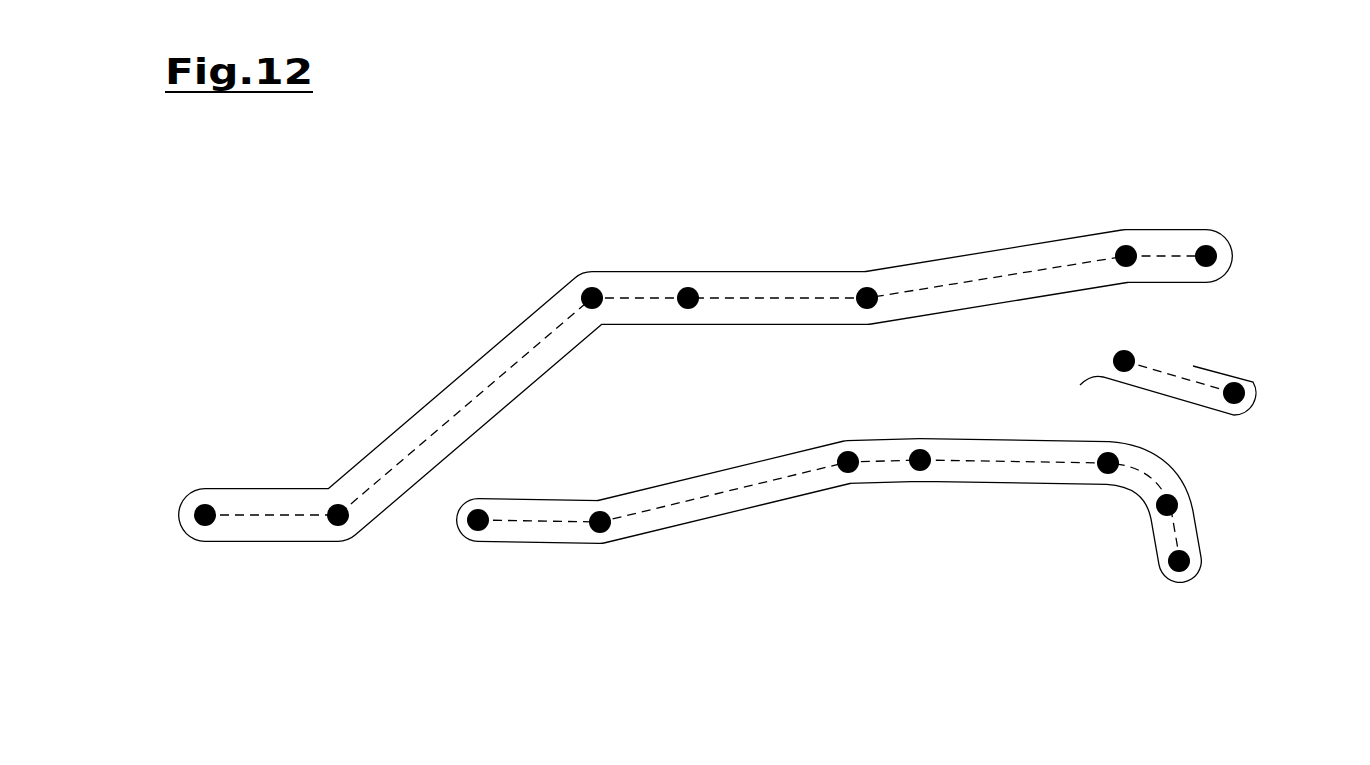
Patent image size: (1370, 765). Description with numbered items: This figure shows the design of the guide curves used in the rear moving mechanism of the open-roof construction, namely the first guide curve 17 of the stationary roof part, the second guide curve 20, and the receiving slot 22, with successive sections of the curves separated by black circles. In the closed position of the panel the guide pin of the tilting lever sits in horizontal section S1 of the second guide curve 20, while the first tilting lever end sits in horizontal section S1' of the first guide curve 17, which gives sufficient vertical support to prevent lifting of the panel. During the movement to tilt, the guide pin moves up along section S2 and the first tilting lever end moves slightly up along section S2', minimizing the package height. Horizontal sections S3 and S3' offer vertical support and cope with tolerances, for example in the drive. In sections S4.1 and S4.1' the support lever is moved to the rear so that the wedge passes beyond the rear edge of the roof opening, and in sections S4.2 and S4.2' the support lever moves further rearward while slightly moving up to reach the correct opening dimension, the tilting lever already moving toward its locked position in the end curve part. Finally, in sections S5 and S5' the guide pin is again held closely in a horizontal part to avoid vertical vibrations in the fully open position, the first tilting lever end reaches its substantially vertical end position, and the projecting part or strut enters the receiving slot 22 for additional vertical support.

The first guide curve 17 is at (645, 528).
The second guide curve 20 is at (270, 532).
The receiving slot 22 is at (1193, 367).
The horizontal section S1 of the second guide curve S1 is at (228, 328).
The section S2 of the second guide curve S2 is at (397, 328).
The horizontal section S3 of the second guide curve S3 is at (610, 221).
The section S4.1 of the second guide curve S4.1 is at (735, 221).
The section S4.2 of the second guide curve S4.2 is at (937, 221).
The section S5 of the second guide curve S5 is at (1166, 200).
The horizontal section S1' of the first guide curve S1' is at (504, 600).
The section S2' of the first guide curve S2' is at (663, 597).
The horizontal section S3' of the first guide curve S3' is at (867, 571).
The section S4.1' of the first guide curve S4.1' is at (970, 570).
The section S4.2' of the first guide curve S4.2' is at (1106, 572).
The section S5' of the first guide curve S5' is at (1209, 593).